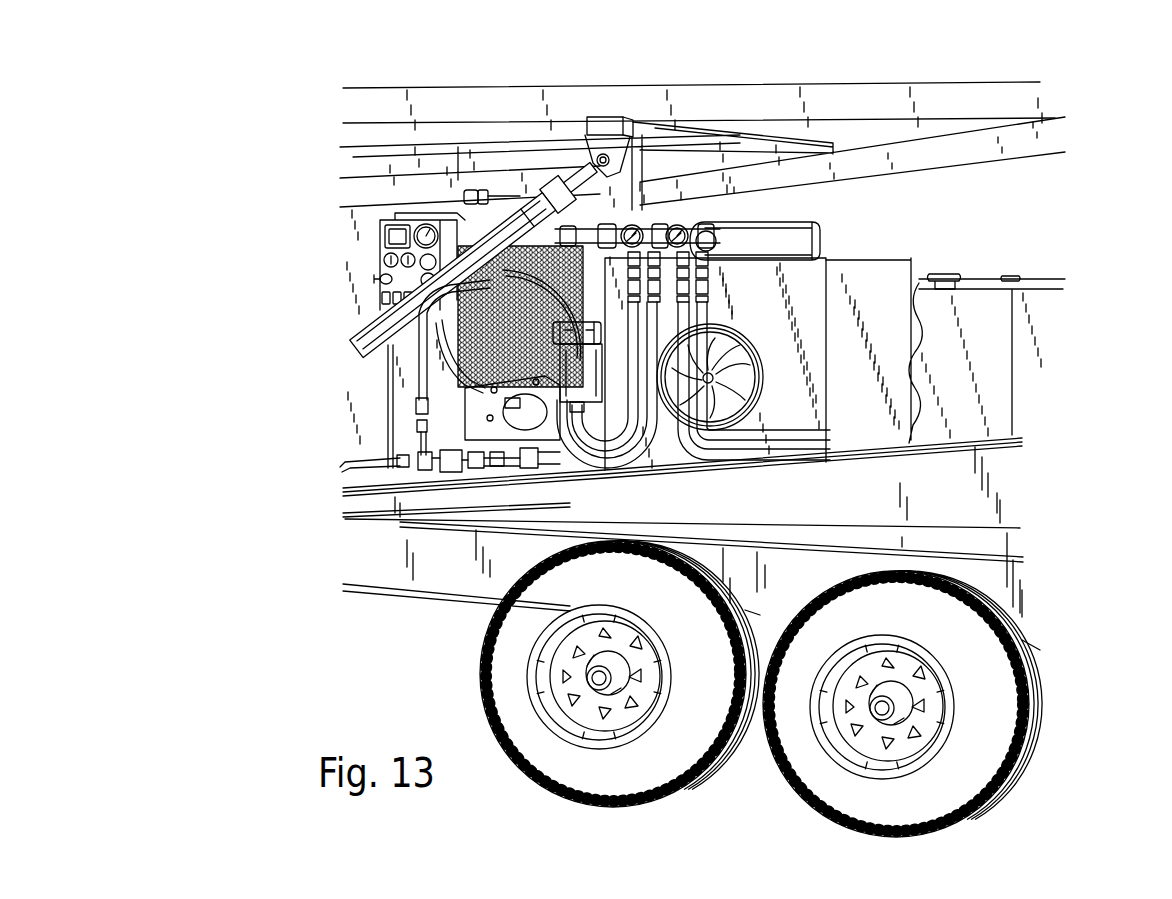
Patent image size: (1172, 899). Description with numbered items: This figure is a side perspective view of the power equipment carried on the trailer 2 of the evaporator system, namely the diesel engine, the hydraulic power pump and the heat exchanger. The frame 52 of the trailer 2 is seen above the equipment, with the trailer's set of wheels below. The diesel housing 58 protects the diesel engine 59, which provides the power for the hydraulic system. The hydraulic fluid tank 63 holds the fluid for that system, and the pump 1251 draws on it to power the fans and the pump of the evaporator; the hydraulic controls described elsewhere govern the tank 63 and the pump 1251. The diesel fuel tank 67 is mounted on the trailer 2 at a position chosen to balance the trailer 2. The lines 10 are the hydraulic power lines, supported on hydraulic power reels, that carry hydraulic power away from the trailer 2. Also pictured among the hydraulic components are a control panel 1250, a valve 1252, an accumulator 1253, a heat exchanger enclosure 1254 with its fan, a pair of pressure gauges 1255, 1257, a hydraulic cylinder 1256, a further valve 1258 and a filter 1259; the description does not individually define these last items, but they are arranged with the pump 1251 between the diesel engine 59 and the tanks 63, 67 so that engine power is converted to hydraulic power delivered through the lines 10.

The trailer 2 is at (970, 493).
The lines 10 is at (680, 420).
The frame 52 is at (840, 103).
The diesel housing 58 is at (495, 370).
The diesel engine 59 is at (470, 430).
The hydraulic fluid tank 63 is at (680, 323).
The diesel fuel tank 67 is at (987, 310).
The control panel 1250 is at (390, 237).
The pump 1251 is at (495, 458).
The valve 1252 is at (578, 455).
The accumulator 1253 is at (762, 232).
The cooler enclosure 1254 is at (705, 307).
The pressure gauge 1255 is at (677, 225).
The hydraulic cylinder 1256 is at (577, 233).
The pressure gauge 1257 is at (632, 225).
The valve 1258 is at (595, 460).
The filter 1259 is at (545, 455).